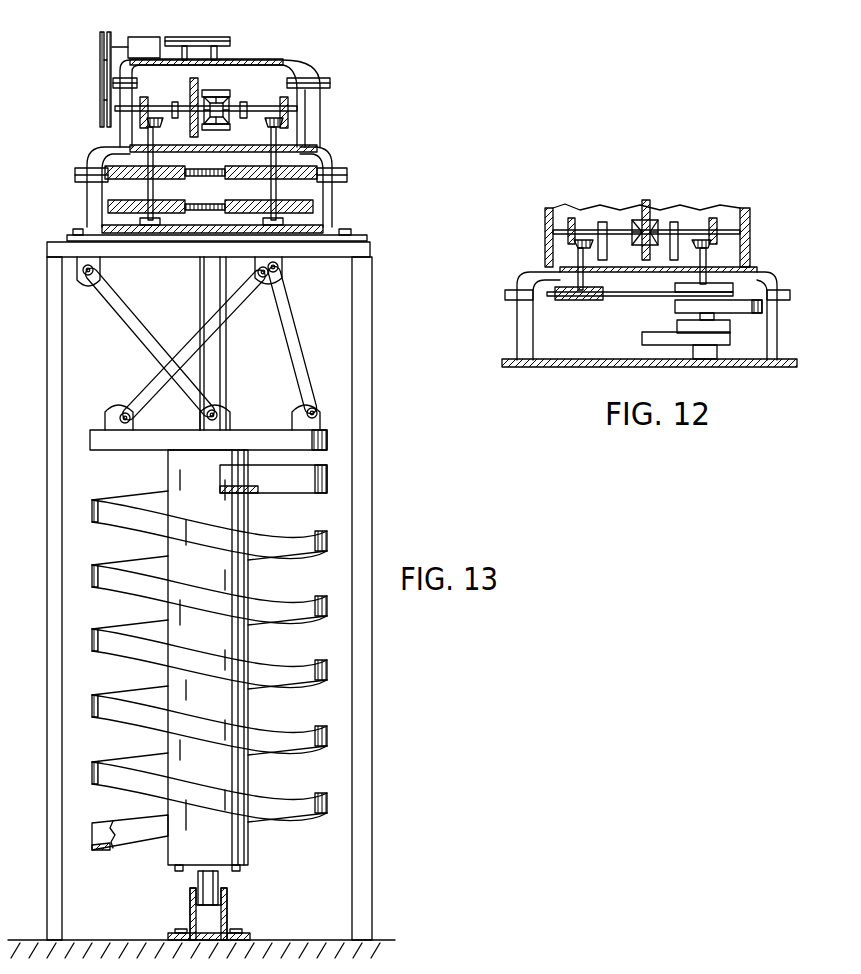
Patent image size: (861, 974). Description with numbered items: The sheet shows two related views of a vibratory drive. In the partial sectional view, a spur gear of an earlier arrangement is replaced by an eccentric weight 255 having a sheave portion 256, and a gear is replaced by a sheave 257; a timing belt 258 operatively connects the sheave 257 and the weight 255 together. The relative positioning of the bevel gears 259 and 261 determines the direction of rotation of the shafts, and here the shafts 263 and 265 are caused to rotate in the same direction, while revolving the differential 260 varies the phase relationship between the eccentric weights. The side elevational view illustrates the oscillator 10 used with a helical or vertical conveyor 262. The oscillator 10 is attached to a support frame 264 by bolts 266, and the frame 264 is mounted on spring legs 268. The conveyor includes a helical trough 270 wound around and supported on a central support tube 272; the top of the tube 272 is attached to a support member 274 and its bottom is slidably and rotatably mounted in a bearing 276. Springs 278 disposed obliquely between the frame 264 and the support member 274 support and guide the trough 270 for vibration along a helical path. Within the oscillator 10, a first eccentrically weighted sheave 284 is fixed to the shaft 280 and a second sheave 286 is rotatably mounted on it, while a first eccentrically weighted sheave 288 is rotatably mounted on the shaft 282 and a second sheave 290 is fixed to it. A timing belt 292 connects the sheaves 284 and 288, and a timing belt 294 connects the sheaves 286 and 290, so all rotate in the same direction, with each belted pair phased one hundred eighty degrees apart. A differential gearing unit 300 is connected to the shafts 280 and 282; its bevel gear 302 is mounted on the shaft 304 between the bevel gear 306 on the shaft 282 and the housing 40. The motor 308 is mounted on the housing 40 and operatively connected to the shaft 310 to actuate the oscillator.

In FIG. 13, the oscillator 10 is at (388, 119).
In FIG. 13, the housing 40 is at (318, 108).
In FIG. 12, the eccentric weight 255 is at (758, 295).
In FIG. 12, the sheave portion 256 is at (753, 277).
In FIG. 12, the sheave 257 is at (565, 301).
In FIG. 12, the timing belt 258 is at (653, 297).
In FIG. 12, the bevel gear 259 is at (570, 222).
In FIG. 12, the differential 260 is at (653, 218).
In FIG. 12, the bevel gear 261 is at (712, 222).
In FIG. 13, the helical or vertical conveyor 262 is at (40, 274).
In FIG. 12, the shaft 263 is at (578, 260).
In FIG. 13, the support frame 264 is at (362, 252).
In FIG. 12, the shaft 265 is at (707, 260).
In FIG. 13, the bolts 266 is at (352, 230).
In FIG. 13, the spring legs 268 is at (50, 343).
In FIG. 13, the helical trough 270 is at (285, 532).
In FIG. 13, the central support tube 272 is at (230, 705).
In FIG. 13, the support member 274 is at (328, 450).
In FIG. 13, the bearing 276 is at (227, 916).
In FIG. 13, the springs 278 is at (147, 353).
In FIG. 13, the shaft 280 is at (149, 226).
In FIG. 13, the shaft 282 is at (274, 226).
In FIG. 13, the first eccentrically weighted sheave 284 is at (128, 165).
In FIG. 13, the second sheave 286 is at (112, 205).
In FIG. 13, the first eccentrically weighted sheave 288 is at (317, 180).
In FIG. 13, the second sheave 290 is at (318, 210).
In FIG. 13, the timing belt 292 is at (210, 176).
In FIG. 13, the timing belt 294 is at (203, 213).
In FIG. 13, the differential gearing unit 300 is at (233, 100).
In FIG. 13, the bevel gear 302 is at (290, 60).
In FIG. 13, the shaft 304 is at (263, 106).
In FIG. 13, the bevel gear 306 is at (307, 133).
In FIG. 13, the motor 308 is at (150, 50).
In FIG. 13, the shaft 310 is at (115, 136).